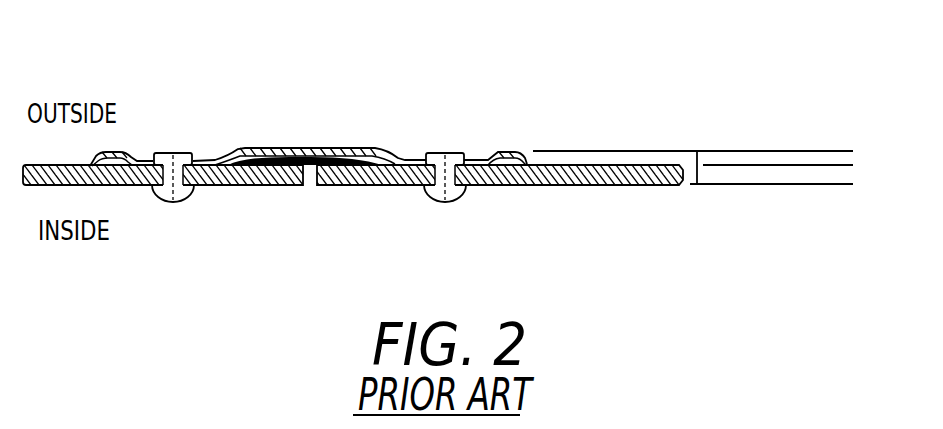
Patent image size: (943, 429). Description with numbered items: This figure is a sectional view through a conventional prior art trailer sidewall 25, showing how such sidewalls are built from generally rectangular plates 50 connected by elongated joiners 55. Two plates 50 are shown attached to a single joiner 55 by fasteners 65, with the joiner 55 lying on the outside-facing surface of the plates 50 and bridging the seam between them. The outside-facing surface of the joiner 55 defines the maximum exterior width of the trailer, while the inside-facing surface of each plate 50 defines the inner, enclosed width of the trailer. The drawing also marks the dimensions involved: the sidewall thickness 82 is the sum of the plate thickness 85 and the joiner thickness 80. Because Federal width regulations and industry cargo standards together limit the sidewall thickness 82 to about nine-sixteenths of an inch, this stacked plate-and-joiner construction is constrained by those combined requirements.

The sidewall 25 is at (534, 93).
The plate 50 is at (259, 187).
The joiner 55 is at (378, 150).
The fastener 65 is at (176, 197).
The joiner thickness 80 is at (817, 200).
The sidewall thickness 82 is at (694, 165).
The plate thickness 85 is at (758, 137).